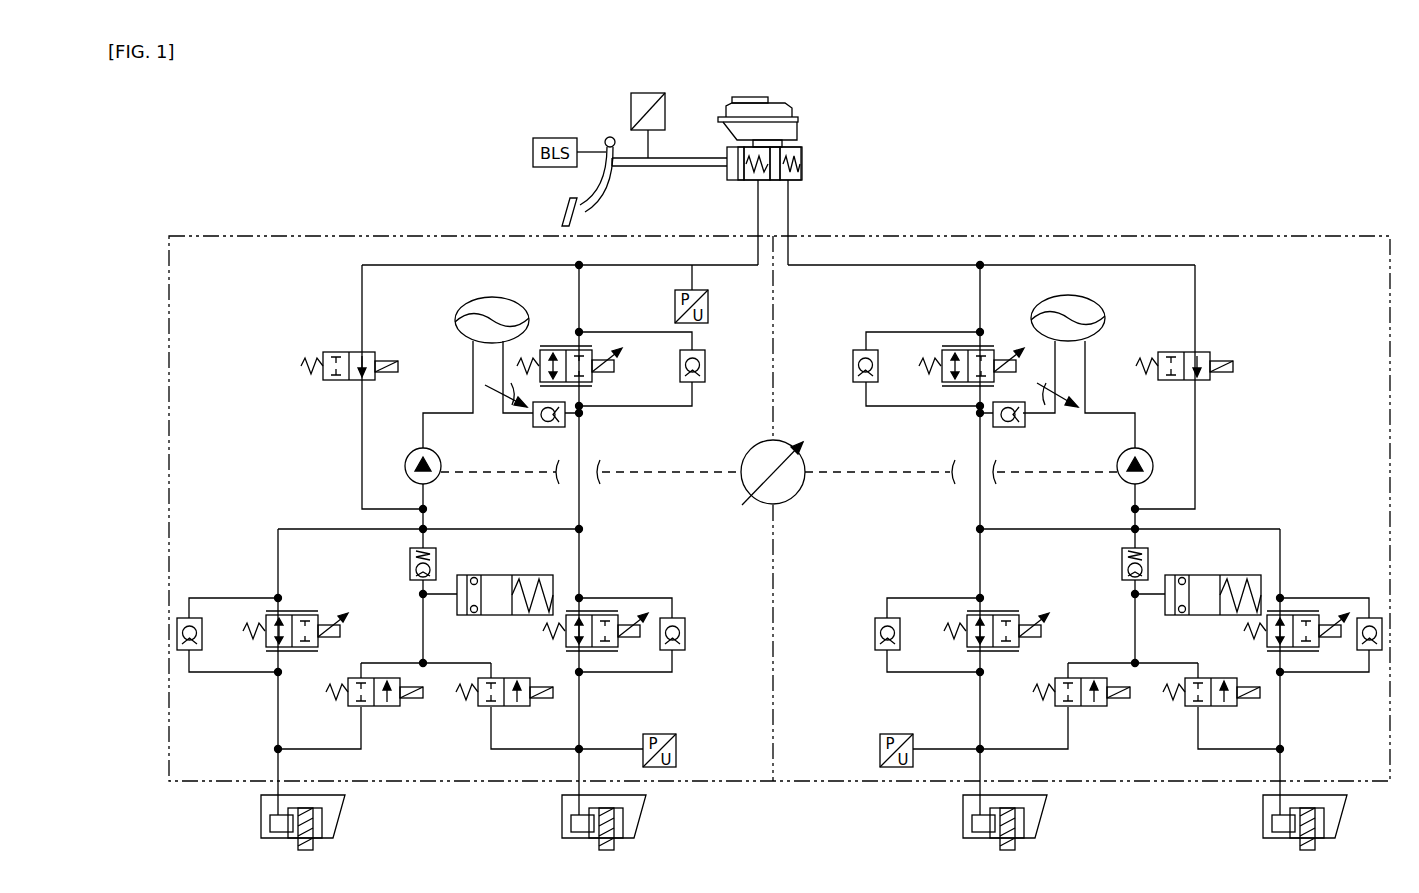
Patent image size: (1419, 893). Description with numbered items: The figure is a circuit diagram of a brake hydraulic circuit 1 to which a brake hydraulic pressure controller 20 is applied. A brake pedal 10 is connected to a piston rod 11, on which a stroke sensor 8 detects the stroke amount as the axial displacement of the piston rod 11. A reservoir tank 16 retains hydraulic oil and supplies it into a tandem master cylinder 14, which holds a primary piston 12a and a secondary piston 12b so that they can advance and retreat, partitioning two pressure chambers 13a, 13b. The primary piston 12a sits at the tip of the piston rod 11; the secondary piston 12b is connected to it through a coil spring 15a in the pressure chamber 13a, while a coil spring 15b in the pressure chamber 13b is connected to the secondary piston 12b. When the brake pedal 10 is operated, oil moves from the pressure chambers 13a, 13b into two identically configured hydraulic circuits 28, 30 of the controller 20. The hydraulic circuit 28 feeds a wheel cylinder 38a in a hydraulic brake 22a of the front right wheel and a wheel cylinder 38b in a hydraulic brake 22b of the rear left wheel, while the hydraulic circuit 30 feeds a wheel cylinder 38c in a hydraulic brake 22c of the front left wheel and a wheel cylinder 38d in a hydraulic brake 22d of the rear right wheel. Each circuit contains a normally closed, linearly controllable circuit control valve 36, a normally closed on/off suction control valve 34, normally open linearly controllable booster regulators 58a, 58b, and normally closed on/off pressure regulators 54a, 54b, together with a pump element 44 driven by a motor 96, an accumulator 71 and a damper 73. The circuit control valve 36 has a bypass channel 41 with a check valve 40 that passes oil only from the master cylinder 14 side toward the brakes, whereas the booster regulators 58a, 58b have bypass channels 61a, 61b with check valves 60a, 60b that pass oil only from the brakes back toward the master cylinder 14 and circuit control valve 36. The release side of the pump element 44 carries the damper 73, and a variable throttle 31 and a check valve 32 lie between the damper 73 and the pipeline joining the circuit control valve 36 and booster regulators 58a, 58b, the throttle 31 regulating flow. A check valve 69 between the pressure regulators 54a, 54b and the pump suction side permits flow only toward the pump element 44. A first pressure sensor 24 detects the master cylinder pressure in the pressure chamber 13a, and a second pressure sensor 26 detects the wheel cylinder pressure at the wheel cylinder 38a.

The brake hydraulic circuit 1 is at (1022, 124).
The stroke sensor 8 is at (630, 112).
The brake pedal 10 is at (562, 210).
The piston rod 11 is at (666, 168).
The primary piston 12a is at (738, 179).
The secondary piston 12b is at (774, 180).
The pressure chamber 13a is at (751, 182).
The pressure chamber 13b is at (803, 174).
The master cylinder 14 is at (803, 152).
The coil spring 15a is at (742, 154).
The coil spring 15b is at (803, 161).
The reservoir tank 16 is at (723, 112).
The brake hydraulic pressure controller 20 is at (1150, 237).
The hydraulic brake 22a is at (597, 844).
The hydraulic brake 22b is at (296, 844).
The hydraulic brake 22c is at (998, 844).
The hydraulic brake 22d is at (1298, 844).
The first pressure sensor 24 is at (709, 305).
The second pressure sensor 26 is at (677, 745).
The hydraulic circuit 28 is at (465, 249).
The hydraulic circuit 30 is at (993, 248).
The variable throttle 31 is at (486, 402).
The check valve 32 is at (549, 428).
The suction control valve 34 is at (377, 352).
The circuit control valve 36 is at (540, 352).
The wheel cylinder 38a is at (587, 826).
The wheel cylinder 38b is at (276, 826).
The wheel cylinder 38c is at (987, 826).
The wheel cylinder 38d is at (1289, 826).
The check valve 40 is at (704, 366).
The bypass channel 41 is at (616, 332).
The pump element 44 is at (437, 457).
The pressure regulator 54a is at (527, 706).
The pressure regulator 54b is at (347, 706).
The booster regulator 58a is at (566, 643).
The booster regulator 58b is at (264, 641).
The check valve 60a is at (688, 632).
The check valve 60b is at (197, 628).
The bypass channel 61a is at (620, 598).
The bypass channel 61b is at (232, 598).
The check valve 69 is at (438, 560).
The accumulator 71 is at (507, 575).
The damper 73 is at (458, 313).
The motor 96 is at (799, 496).